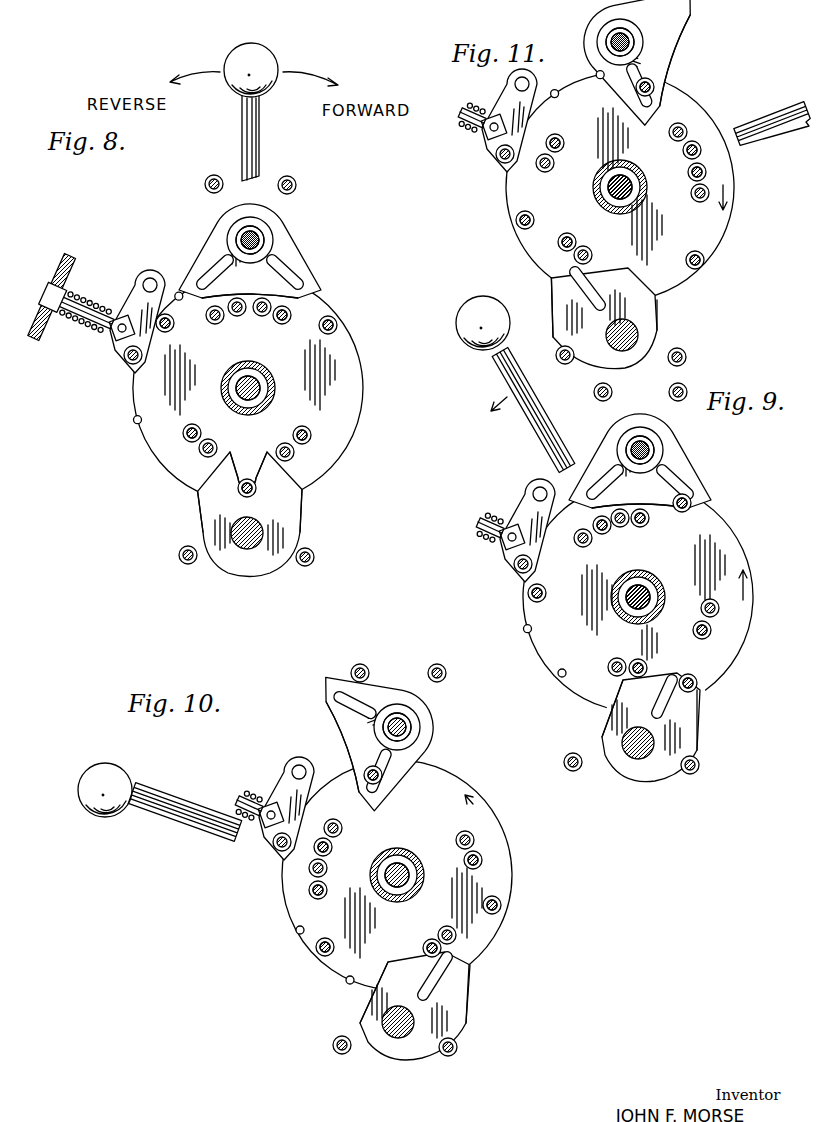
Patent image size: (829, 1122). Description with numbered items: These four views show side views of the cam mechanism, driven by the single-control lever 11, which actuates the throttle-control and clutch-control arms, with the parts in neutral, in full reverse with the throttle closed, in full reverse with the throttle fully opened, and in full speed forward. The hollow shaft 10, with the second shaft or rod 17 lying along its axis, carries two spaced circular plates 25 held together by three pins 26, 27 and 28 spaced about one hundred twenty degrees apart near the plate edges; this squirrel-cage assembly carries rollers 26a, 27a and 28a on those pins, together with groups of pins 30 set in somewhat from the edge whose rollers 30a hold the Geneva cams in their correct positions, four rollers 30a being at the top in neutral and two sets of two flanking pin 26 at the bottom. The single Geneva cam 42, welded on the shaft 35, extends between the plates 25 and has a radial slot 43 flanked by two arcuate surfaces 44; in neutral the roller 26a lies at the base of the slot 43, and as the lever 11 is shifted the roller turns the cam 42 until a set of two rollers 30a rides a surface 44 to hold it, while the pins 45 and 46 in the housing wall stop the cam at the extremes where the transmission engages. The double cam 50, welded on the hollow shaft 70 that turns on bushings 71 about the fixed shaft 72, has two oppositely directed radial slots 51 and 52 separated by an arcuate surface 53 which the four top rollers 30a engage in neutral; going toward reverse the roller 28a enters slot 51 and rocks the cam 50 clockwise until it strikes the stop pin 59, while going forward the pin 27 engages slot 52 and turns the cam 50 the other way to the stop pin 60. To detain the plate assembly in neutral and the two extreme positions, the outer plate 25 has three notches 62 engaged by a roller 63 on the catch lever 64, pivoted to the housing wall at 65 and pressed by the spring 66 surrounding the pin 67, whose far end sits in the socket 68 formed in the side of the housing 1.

In FIG. 8, the housing 1 is at (74, 266).
In FIG. 8, the hollow shaft 10 is at (270, 377).
In FIG. 9, the hollow shaft 10 is at (660, 586).
In FIG. 11, the hollow shaft 10 is at (637, 173).
In FIG. 10, the hollow shaft 10 is at (410, 857).
In FIG. 8, the single-control lever 11 is at (259, 131).
In FIG. 11, the single-control lever 11 is at (762, 130).
In FIG. 10, the single-control lever 11 is at (187, 810).
In FIG. 8, the second shaft or rod 17 is at (260, 388).
In FIG. 9, the second shaft or rod 17 is at (651, 597).
In FIG. 11, the second shaft or rod 17 is at (633, 188).
In FIG. 10, the second shaft or rod 17 is at (410, 874).
In FIG. 8, the circular plates 25 is at (363, 405).
In FIG. 9, the circular plates 25 is at (754, 621).
In FIG. 11, the circular plates 25 is at (736, 207).
In FIG. 10, the circular plates 25 is at (506, 822).
In FIG. 8, the pin 26 is at (257, 491).
In FIG. 9, the pin 26 is at (697, 678).
In FIG. 11, the pin 26 is at (534, 223).
In FIG. 10, the pin 26 is at (502, 906).
In FIG. 8, the roller 26a is at (258, 486).
In FIG. 9, the roller 26a is at (698, 684).
In FIG. 11, the roller 26a is at (534, 218).
In FIG. 10, the roller 26a is at (503, 901).
In FIG. 8, the pin 27 is at (165, 333).
In FIG. 9, the pin 27 is at (547, 591).
In FIG. 11, the pin 27 is at (657, 85).
In FIG. 10, the pin 27 is at (334, 952).
In FIG. 8, the roller 27a is at (174, 330).
In FIG. 9, the roller 27a is at (547, 598).
In FIG. 11, the roller 27a is at (653, 100).
In FIG. 10, the roller 27a is at (335, 946).
In FIG. 8, the pin 28 is at (338, 325).
In FIG. 9, the pin 28 is at (692, 502).
In FIG. 11, the pin 28 is at (686, 260).
In FIG. 10, the pin 28 is at (366, 788).
In FIG. 8, the roller 28a is at (337, 318).
In FIG. 9, the roller 28a is at (689, 513).
In FIG. 11, the roller 28a is at (697, 251).
In FIG. 10, the roller 28a is at (382, 786).
In FIG. 8, the pins 30 is at (220, 323).
In FIG. 9, the pins 30 is at (591, 546).
In FIG. 11, the pins 30 is at (565, 144).
In FIG. 10, the pins 30 is at (324, 830).
In FIG. 8, the rollers 30a is at (290, 320).
In FIG. 9, the rollers 30a is at (593, 528).
In FIG. 11, the rollers 30a is at (560, 137).
In FIG. 10, the rollers 30a is at (334, 846).
In FIG. 8, the shaft 35 is at (238, 548).
In FIG. 9, the shaft 35 is at (630, 756).
In FIG. 11, the shaft 35 is at (628, 352).
In FIG. 10, the shaft 35 is at (396, 1040).
In FIG. 8, the single Geneva cam 42 is at (297, 513).
In FIG. 9, the single Geneva cam 42 is at (699, 720).
In FIG. 11, the single Geneva cam 42 is at (656, 310).
In FIG. 10, the single Geneva cam 42 is at (471, 993).
In FIG. 8, the radial slot 43 is at (240, 472).
In FIG. 9, the radial slot 43 is at (694, 706).
In FIG. 11, the radial slot 43 is at (590, 287).
In FIG. 10, the radial slot 43 is at (470, 962).
In FIG. 8, the arcuate surfaces 44 is at (200, 500).
In FIG. 9, the arcuate surfaces 44 is at (641, 686).
In FIG. 11, the arcuate surfaces 44 is at (553, 312).
In FIG. 10, the arcuate surfaces 44 is at (403, 970).
In FIG. 8, the pin 45 is at (186, 565).
In FIG. 9, the pin 45 is at (574, 752).
In FIG. 11, the pin 45 is at (565, 365).
In FIG. 10, the pin 45 is at (348, 1055).
In FIG. 8, the pin 46 is at (315, 557).
In FIG. 9, the pin 46 is at (700, 769).
In FIG. 11, the pin 46 is at (688, 353).
In FIG. 10, the pin 46 is at (460, 1049).
In FIG. 8, the double cam 50 is at (312, 270).
In FIG. 9, the double cam 50 is at (682, 462).
In FIG. 11, the double cam 50 is at (690, 40).
In FIG. 10, the double cam 50 is at (427, 740).
In FIG. 8, the radial slot 51 is at (300, 266).
In FIG. 9, the radial slot 51 is at (693, 483).
In FIG. 10, the radial slot 51 is at (381, 802).
In FIG. 8, the radial slot 52 is at (213, 248).
In FIG. 9, the radial slot 52 is at (586, 500).
In FIG. 11, the radial slot 52 is at (626, 103).
In FIG. 10, the radial slot 52 is at (331, 694).
In FIG. 8, the arcuate surface 53 is at (258, 298).
In FIG. 9, the arcuate surface 53 is at (662, 516).
In FIG. 11, the arcuate surface 53 is at (686, 52).
In FIG. 10, the arcuate surface 53 is at (342, 745).
In FIG. 8, the pin 59 is at (214, 175).
In FIG. 9, the pin 59 is at (609, 400).
In FIG. 10, the pin 59 is at (368, 665).
In FIG. 8, the stop pin 60 is at (294, 182).
In FIG. 9, the stop pin 60 is at (686, 389).
In FIG. 10, the stop pin 60 is at (446, 672).
In FIG. 8, the notches 62 is at (143, 418).
In FIG. 9, the notches 62 is at (534, 629).
In FIG. 11, the notches 62 is at (558, 97).
In FIG. 10, the notches 62 is at (304, 928).
In FIG. 8, the roller 63 is at (124, 361).
In FIG. 9, the roller 63 is at (516, 573).
In FIG. 11, the roller 63 is at (496, 160).
In FIG. 10, the roller 63 is at (276, 853).
In FIG. 8, the catch lever 64 is at (144, 278).
In FIG. 9, the catch lever 64 is at (520, 506).
In FIG. 11, the catch lever 64 is at (512, 93).
In FIG. 10, the catch lever 64 is at (287, 780).
In FIG. 8, the pivot 65 is at (153, 278).
In FIG. 9, the pivot 65 is at (536, 487).
In FIG. 11, the pivot 65 is at (530, 88).
In FIG. 10, the pivot 65 is at (298, 764).
In FIG. 8, the spring 66 is at (92, 306).
In FIG. 9, the spring 66 is at (500, 547).
In FIG. 11, the spring 66 is at (490, 118).
In FIG. 8, the pin 67 is at (105, 327).
In FIG. 9, the pin 67 is at (500, 538).
In FIG. 11, the pin 67 is at (480, 108).
In FIG. 8, the socket 68 is at (56, 264).
In FIG. 8, the hollow shaft 70 is at (271, 240).
In FIG. 9, the hollow shaft 70 is at (664, 452).
In FIG. 11, the hollow shaft 70 is at (641, 46).
In FIG. 10, the hollow shaft 70 is at (415, 729).
In FIG. 8, the bushings 71 is at (263, 236).
In FIG. 9, the bushings 71 is at (656, 447).
In FIG. 11, the bushings 71 is at (608, 50).
In FIG. 10, the bushings 71 is at (407, 720).
In FIG. 8, the fixed shaft 72 is at (258, 233).
In FIG. 9, the fixed shaft 72 is at (652, 440).
In FIG. 11, the fixed shaft 72 is at (610, 43).
In FIG. 10, the fixed shaft 72 is at (412, 724).